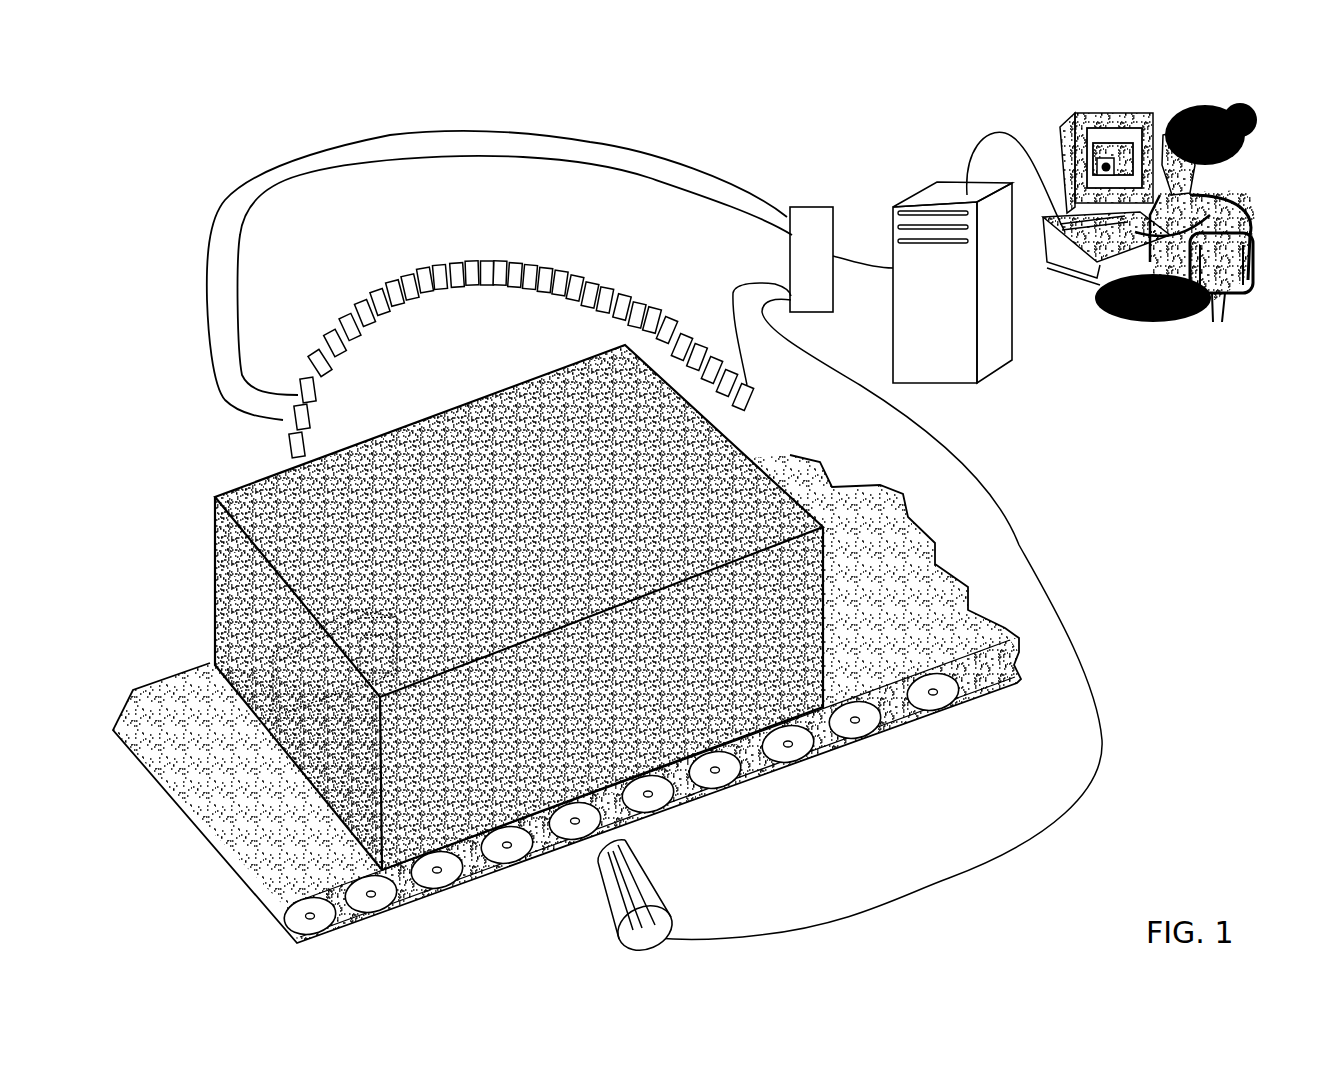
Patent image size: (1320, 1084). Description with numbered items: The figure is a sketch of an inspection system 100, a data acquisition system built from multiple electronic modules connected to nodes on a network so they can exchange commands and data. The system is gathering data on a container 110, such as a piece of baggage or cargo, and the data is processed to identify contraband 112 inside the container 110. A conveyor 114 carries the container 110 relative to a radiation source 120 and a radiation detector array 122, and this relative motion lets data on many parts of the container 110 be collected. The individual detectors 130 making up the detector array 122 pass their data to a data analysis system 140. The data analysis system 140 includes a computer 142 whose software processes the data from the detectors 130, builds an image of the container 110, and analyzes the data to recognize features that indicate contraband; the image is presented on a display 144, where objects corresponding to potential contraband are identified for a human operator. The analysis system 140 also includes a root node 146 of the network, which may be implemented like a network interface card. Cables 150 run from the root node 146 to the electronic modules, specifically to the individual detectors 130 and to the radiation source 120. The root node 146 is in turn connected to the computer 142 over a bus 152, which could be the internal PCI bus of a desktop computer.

The inspection system 100 is at (1152, 546).
The container 110 is at (487, 607).
The contraband 112 is at (362, 650).
The conveyor 114 is at (954, 652).
The radiation source 120 is at (592, 918).
The radiation detector array 122 is at (521, 331).
The detectors 130 is at (672, 317).
The data analysis system 140 is at (1023, 274).
The computer 142 is at (991, 374).
The display 144 is at (1062, 140).
The root node 146 is at (822, 207).
The cables 150 is at (752, 273).
The bus 152 is at (855, 253).